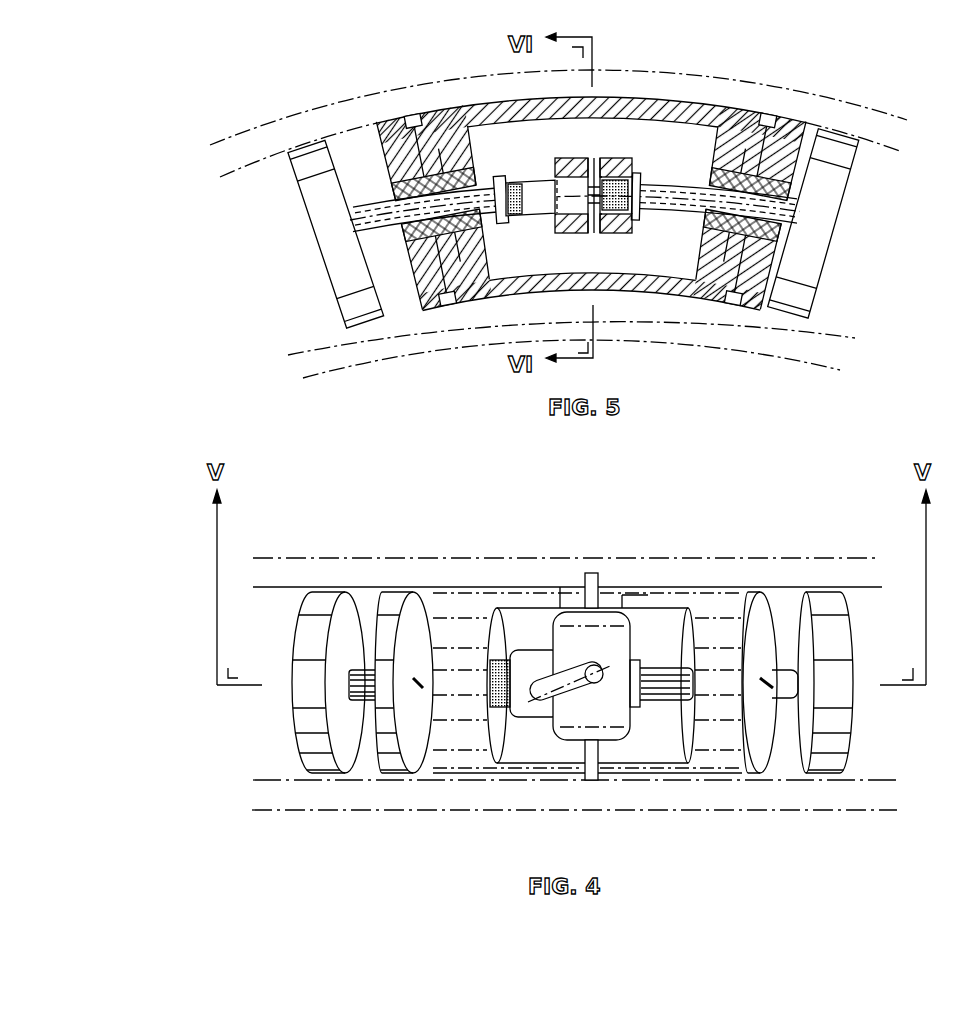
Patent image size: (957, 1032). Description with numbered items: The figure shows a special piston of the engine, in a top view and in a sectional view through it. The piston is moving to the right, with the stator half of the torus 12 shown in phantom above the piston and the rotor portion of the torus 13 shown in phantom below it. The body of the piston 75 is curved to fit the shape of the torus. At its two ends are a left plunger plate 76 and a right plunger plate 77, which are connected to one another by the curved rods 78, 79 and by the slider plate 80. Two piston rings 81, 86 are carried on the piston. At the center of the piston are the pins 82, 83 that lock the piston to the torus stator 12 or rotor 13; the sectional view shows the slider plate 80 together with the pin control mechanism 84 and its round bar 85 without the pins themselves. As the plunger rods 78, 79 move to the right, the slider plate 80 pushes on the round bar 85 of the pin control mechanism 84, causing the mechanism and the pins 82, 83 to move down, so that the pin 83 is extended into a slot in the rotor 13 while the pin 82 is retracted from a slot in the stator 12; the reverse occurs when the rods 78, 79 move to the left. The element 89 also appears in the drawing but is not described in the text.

In FIG. 4, the stator half of the torus 12 is at (872, 556).
In FIG. 4, the rotor portion of the torus 13 is at (853, 812).
In FIG. 4, the piston body 75 is at (466, 582).
In FIG. 5, the left plunger plate 76 is at (300, 140).
In FIG. 4, the left plunger plate 76 is at (330, 590).
In FIG. 5, the right plunger plate 77 is at (835, 128).
In FIG. 4, the right plunger plate 77 is at (823, 588).
In FIG. 5, the curved rod 78 is at (373, 207).
In FIG. 4, the curved rod 78 is at (370, 670).
In FIG. 4, the curved rod 79 is at (663, 668).
In FIG. 5, the slider plate 80 is at (535, 180).
In FIG. 4, the slider plate 80 is at (545, 650).
In FIG. 5, the piston ring 81 is at (417, 113).
In FIG. 4, the piston ring 81 is at (435, 783).
In FIG. 4, the pin 82 is at (588, 573).
In FIG. 4, the pin 83 is at (585, 788).
In FIG. 5, the pin control mechanism 84 is at (623, 160).
In FIG. 4, the pin control mechanism 84 is at (627, 735).
In FIG. 5, the round bar 85 is at (594, 160).
In FIG. 4, the round bar 85 is at (596, 666).
In FIG. 5, the piston ring 86 is at (777, 113).
In FIG. 4, the piston ring 86 is at (748, 782).
In FIG. 4, the collar 89 is at (530, 717).